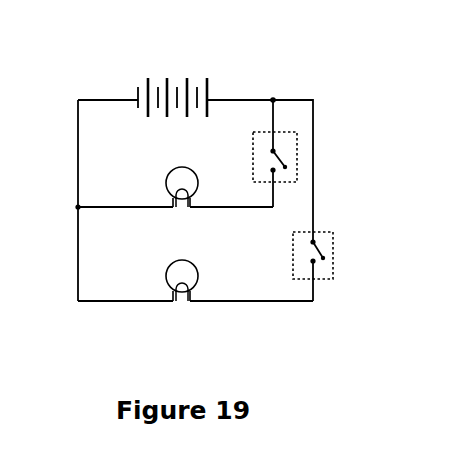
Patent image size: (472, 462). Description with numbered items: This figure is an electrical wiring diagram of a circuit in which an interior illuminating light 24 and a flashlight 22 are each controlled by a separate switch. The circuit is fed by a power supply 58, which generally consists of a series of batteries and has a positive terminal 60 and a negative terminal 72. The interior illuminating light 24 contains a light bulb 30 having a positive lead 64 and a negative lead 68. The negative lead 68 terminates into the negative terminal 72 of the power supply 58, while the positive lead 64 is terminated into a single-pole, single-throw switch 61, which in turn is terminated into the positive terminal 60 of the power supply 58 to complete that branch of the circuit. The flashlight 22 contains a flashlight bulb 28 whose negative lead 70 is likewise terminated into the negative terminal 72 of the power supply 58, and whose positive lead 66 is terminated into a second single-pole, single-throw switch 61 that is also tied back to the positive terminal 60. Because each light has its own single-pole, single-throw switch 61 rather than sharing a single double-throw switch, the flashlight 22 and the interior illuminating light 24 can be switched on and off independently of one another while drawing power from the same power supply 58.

The power supply 58 is at (163, 65).
The positive terminal 60 is at (273, 100).
The single-pole, single-throw switch 61 is at (298, 139).
The positive lead 66 is at (260, 207).
The negative terminal 72 is at (78, 207).
The negative lead 70 is at (130, 207).
The negative lead 68 is at (138, 301).
The positive lead 64 is at (285, 301).
The flashlight 22 is at (162, 178).
The interior illuminating light 24 is at (207, 261).
The flashlight bulb 28 is at (197, 173).
The light bulb 30 is at (170, 265).